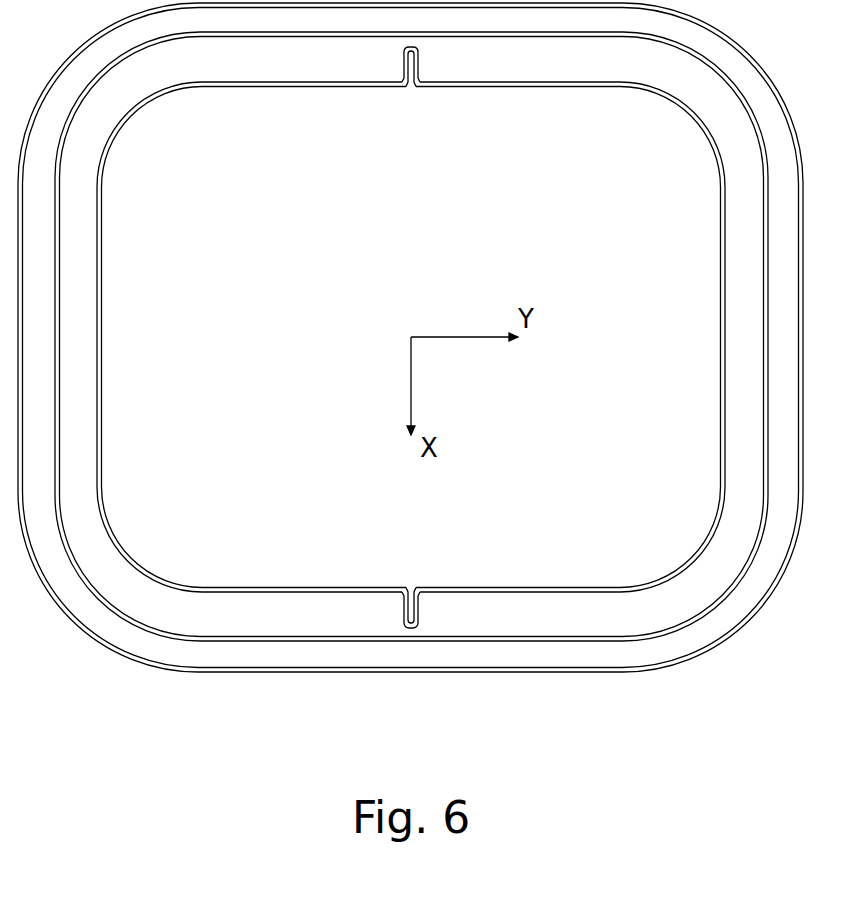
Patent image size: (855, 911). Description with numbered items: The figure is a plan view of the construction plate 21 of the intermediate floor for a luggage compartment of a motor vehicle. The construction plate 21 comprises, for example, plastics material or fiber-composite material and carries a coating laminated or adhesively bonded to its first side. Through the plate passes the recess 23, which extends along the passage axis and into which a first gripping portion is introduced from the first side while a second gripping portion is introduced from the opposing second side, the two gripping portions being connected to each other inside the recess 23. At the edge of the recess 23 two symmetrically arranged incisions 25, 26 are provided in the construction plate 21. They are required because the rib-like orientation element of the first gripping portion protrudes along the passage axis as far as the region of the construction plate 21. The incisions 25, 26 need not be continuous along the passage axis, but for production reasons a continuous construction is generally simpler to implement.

The construction plate 21 is at (97, 722).
The recess 23 is at (272, 467).
The incision 25 is at (402, 68).
The incision 26 is at (418, 607).